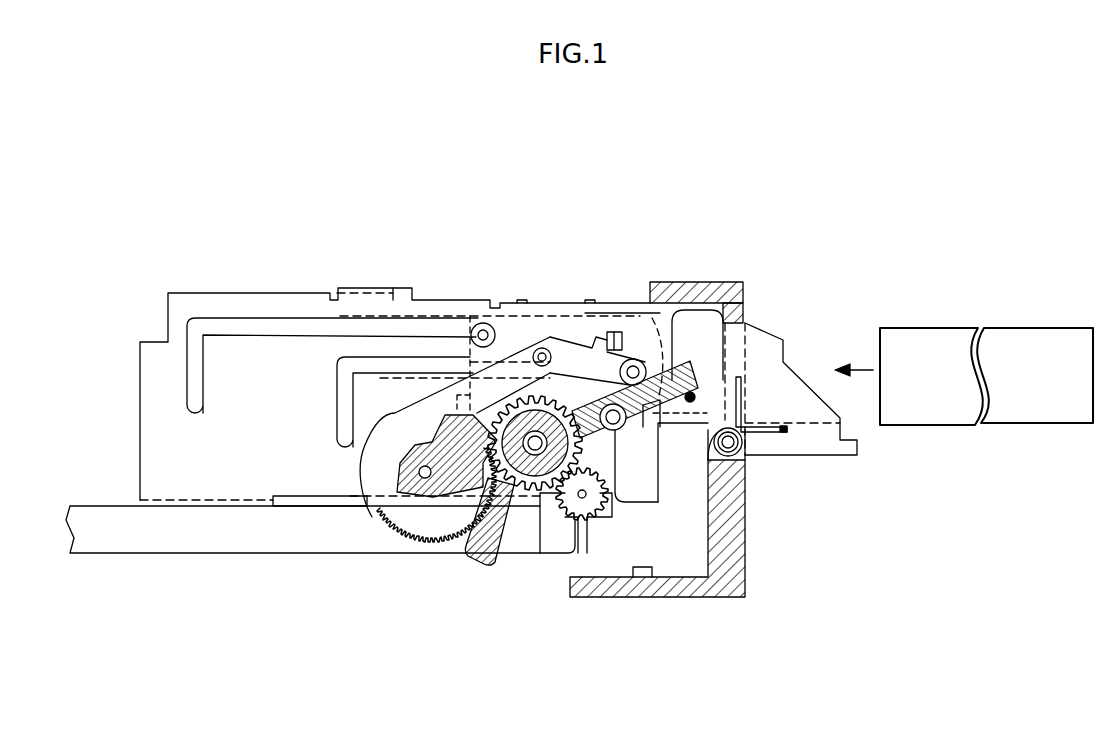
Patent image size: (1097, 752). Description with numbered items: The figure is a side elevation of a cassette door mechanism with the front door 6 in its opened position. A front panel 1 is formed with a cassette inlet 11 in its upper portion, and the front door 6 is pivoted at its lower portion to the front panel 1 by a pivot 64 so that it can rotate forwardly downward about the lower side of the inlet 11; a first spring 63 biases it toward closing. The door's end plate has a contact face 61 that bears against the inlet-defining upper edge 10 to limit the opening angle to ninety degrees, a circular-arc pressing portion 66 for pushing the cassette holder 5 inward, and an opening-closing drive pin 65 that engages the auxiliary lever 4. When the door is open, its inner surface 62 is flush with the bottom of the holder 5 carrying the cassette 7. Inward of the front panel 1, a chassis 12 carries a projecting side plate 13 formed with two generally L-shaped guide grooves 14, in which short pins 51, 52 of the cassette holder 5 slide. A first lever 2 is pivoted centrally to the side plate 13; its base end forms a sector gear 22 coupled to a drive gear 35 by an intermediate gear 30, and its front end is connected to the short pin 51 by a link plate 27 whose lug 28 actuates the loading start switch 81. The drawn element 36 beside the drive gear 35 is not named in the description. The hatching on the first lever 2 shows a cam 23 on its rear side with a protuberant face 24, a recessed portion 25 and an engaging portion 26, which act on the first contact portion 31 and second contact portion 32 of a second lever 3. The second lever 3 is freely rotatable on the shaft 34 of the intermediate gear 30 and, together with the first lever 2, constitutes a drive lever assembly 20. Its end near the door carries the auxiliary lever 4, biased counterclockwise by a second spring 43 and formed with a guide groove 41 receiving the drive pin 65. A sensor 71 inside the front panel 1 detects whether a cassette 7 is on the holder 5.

The front panel 1 is at (745, 597).
The first lever 2 is at (368, 472).
The second lever 3 is at (545, 520).
The auxiliary lever 4 is at (672, 428).
The cassette holder 5 is at (500, 316).
The front door 6 is at (818, 447).
The cassette 7 is at (895, 415).
The inlet-defining upper edge 10 is at (700, 300).
The cassette inlet 11 is at (655, 466).
The chassis 12 is at (128, 548).
The side plate 13 is at (197, 293).
The guide groove 14 is at (250, 318).
The drive lever assembly 20 is at (613, 445).
The sector gear 22 is at (383, 517).
The cam 23 is at (400, 530).
The protuberant face 24 is at (425, 520).
The recessed portion 25 is at (410, 520).
The engaging portion 26 is at (392, 528).
The link plate 27 is at (538, 347).
The lug 28 is at (601, 334).
The intermediate gear 30 is at (508, 548).
The first contact portion 31 is at (457, 520).
The second contact portion 32 is at (467, 557).
The shaft 34 is at (540, 410).
The drive gear 35 is at (600, 512).
The gear shaft 36 is at (562, 522).
The guide groove 41 is at (680, 382).
The second spring 43 is at (657, 428).
The short pin 51 is at (634, 358).
The short pin 52 is at (475, 315).
The contact face 61 is at (747, 320).
The inner surface 62 is at (822, 465).
The first spring 63 is at (760, 432).
The pivot 64 is at (743, 456).
The opening-closing drive pin 65 is at (695, 395).
The circular-arc pressing portion 66 is at (653, 300).
The sensor 71 is at (665, 577).
The loading start switch 81 is at (603, 333).